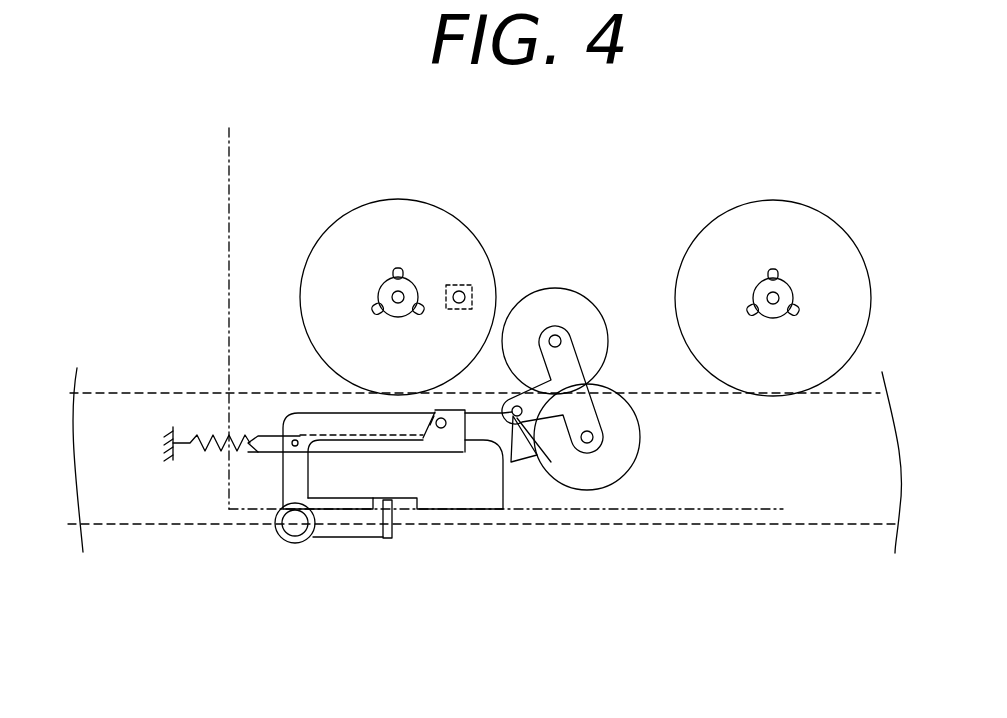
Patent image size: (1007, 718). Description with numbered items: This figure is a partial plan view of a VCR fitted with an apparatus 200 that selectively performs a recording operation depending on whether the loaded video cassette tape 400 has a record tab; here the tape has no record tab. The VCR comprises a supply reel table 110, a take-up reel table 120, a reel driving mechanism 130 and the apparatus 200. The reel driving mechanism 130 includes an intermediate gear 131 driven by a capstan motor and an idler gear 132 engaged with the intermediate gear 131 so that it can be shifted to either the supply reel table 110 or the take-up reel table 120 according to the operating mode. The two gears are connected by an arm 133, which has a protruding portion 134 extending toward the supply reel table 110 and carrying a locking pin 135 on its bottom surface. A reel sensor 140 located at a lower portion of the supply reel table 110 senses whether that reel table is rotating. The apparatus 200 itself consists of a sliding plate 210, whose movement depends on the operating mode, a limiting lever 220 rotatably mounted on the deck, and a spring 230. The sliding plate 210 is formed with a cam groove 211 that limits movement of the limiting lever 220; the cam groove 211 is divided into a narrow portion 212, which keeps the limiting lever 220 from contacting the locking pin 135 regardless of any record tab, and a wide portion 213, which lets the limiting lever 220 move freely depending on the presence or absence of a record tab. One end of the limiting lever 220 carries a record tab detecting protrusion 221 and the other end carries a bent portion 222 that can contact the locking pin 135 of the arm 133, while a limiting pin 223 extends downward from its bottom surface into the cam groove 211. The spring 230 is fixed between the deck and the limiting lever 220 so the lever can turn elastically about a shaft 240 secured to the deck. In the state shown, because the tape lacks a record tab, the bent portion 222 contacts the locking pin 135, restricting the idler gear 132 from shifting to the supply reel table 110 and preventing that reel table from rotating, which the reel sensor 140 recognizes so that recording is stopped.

The supply reel table 110 is at (368, 237).
The take-up reel table 120 is at (812, 235).
The reel driving mechanism 130 is at (656, 422).
The intermediate gear 131 is at (610, 452).
The idler gear 132 is at (562, 307).
The arm 133 is at (585, 405).
The protruding portion 134 is at (538, 412).
The locking pin 135 is at (511, 463).
The reel sensor 140 is at (453, 283).
The apparatus for selectively performing a recording operation 200 is at (336, 429).
The sliding plate 210 is at (123, 488).
The cam groove 211 is at (318, 434).
The narrow portion 212 is at (353, 446).
The wide portion 213 is at (447, 447).
The limiting lever 220 is at (272, 503).
The record tab detecting protrusion 221 is at (385, 538).
The bent portion 222 is at (488, 430).
The limiting pin 223 is at (440, 428).
The spring 230 is at (200, 418).
The shaft 240 is at (294, 545).
The video cassette tape 400 is at (298, 485).